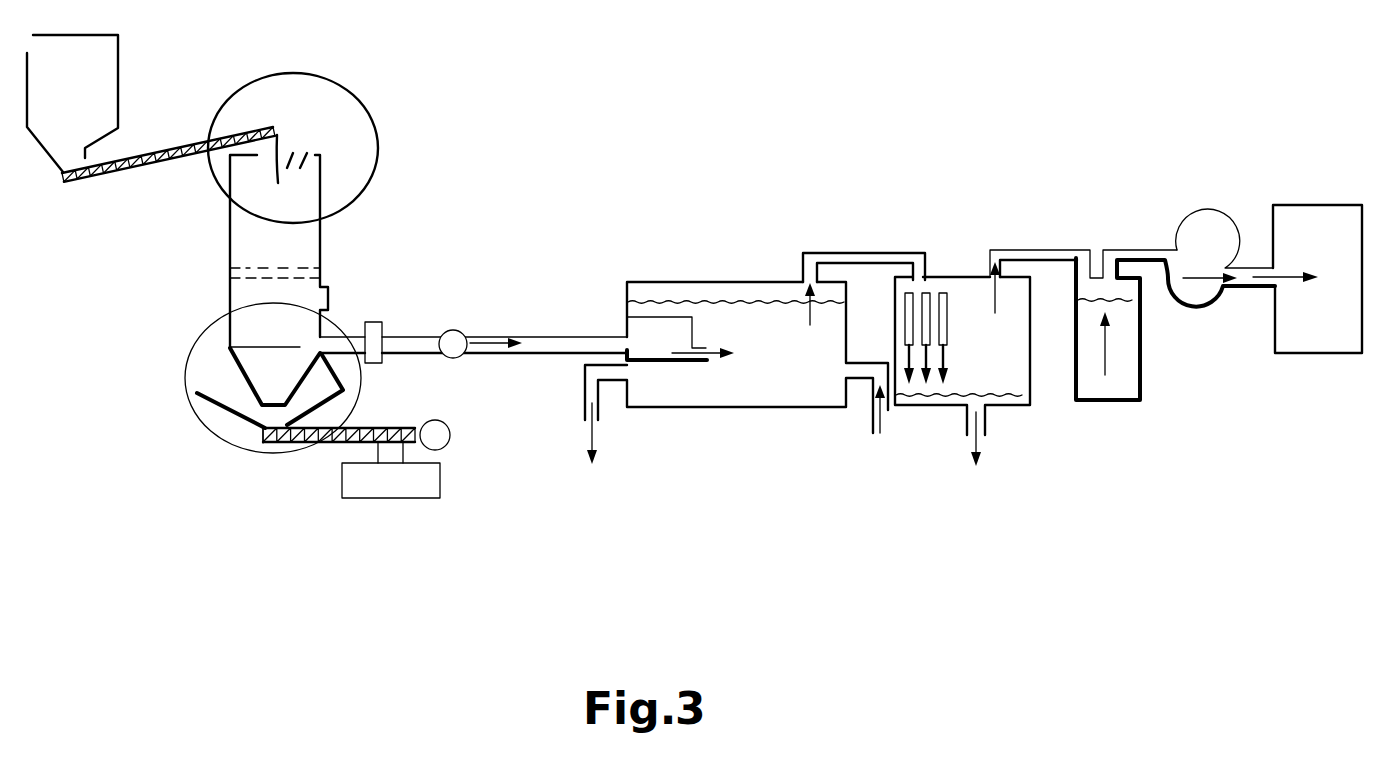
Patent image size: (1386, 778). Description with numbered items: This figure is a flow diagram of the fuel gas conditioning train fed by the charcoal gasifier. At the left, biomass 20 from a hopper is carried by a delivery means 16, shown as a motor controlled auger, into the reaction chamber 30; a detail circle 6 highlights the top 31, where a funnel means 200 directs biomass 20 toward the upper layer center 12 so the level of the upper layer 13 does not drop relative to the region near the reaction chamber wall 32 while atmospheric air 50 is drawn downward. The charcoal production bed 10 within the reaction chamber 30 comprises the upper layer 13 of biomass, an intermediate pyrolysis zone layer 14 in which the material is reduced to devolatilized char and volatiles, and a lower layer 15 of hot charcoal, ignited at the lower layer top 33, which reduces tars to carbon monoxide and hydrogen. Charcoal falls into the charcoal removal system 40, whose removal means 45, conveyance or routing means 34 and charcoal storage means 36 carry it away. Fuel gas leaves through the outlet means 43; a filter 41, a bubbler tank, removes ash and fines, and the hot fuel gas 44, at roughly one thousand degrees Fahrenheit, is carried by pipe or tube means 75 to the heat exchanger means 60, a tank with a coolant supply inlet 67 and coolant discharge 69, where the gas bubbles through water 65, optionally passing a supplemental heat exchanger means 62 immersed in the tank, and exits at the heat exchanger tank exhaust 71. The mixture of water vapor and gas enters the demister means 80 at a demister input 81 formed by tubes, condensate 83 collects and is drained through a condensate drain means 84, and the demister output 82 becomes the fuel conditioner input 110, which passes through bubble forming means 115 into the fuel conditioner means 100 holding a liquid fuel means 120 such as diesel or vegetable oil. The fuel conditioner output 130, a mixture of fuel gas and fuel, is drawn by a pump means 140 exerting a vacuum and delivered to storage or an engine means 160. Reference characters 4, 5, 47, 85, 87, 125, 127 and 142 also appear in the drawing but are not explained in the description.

The process flow line 4 is at (1160, 340).
The flow outlet 5 is at (1130, 347).
The detail circle 6 is at (333, 82).
The charcoal production bed 10 is at (238, 322).
The upper layer center 12 is at (267, 193).
The upper layer 13 is at (340, 170).
The intermediate pyrolysis zone layer 14 is at (325, 268).
The lower layer 15 is at (325, 292).
The delivery means 16 is at (168, 140).
The biomass 20 is at (118, 78).
The reaction chamber 30 is at (230, 208).
The top 31 is at (217, 157).
The reaction chamber wall 32 is at (335, 191).
The lower layer top 33 is at (345, 283).
The conveyance or routing means 34 is at (365, 422).
The charcoal storage means 36 is at (390, 498).
The charcoal removal system 40 is at (213, 373).
The filter 41 is at (193, 418).
The outlet means 43 is at (373, 366).
The fuel gas 44 is at (518, 333).
The removal means 45 is at (300, 446).
The conveyor drive 47 is at (442, 447).
The atmospheric air 50 is at (313, 133).
The heat exchanger means 60 is at (783, 392).
The supplemental heat exchanger means 62 is at (657, 348).
The water or coolant 65 is at (758, 307).
The water or coolant supply inlet 67 is at (875, 408).
The water or coolant discharge 69 is at (582, 408).
The heat exchanger tank exhaust 71 is at (813, 253).
The pipe or tube means 75 is at (598, 337).
The demister means 80 is at (938, 407).
The demister input 81 is at (930, 290).
The demister output 82 is at (980, 280).
The condensate 83 is at (1008, 417).
The condensate drain means 84 is at (1013, 407).
The spray nozzles 85 is at (920, 408).
The nozzle supply 87 is at (940, 280).
The fuel conditioner means 100 is at (1125, 400).
The fuel conditioner means input 110 is at (1045, 287).
The bubble forming means 115 is at (1085, 405).
The fuel means 120 is at (1133, 350).
The pump inlet 125 is at (1150, 300).
The reactor level line 127 is at (263, 265).
The fuel conditioner output 130 is at (1102, 263).
The pump means 140 is at (1193, 257).
The feed pump 142 is at (455, 330).
The engine means 160 is at (1332, 220).
The funnel means 200 is at (290, 148).